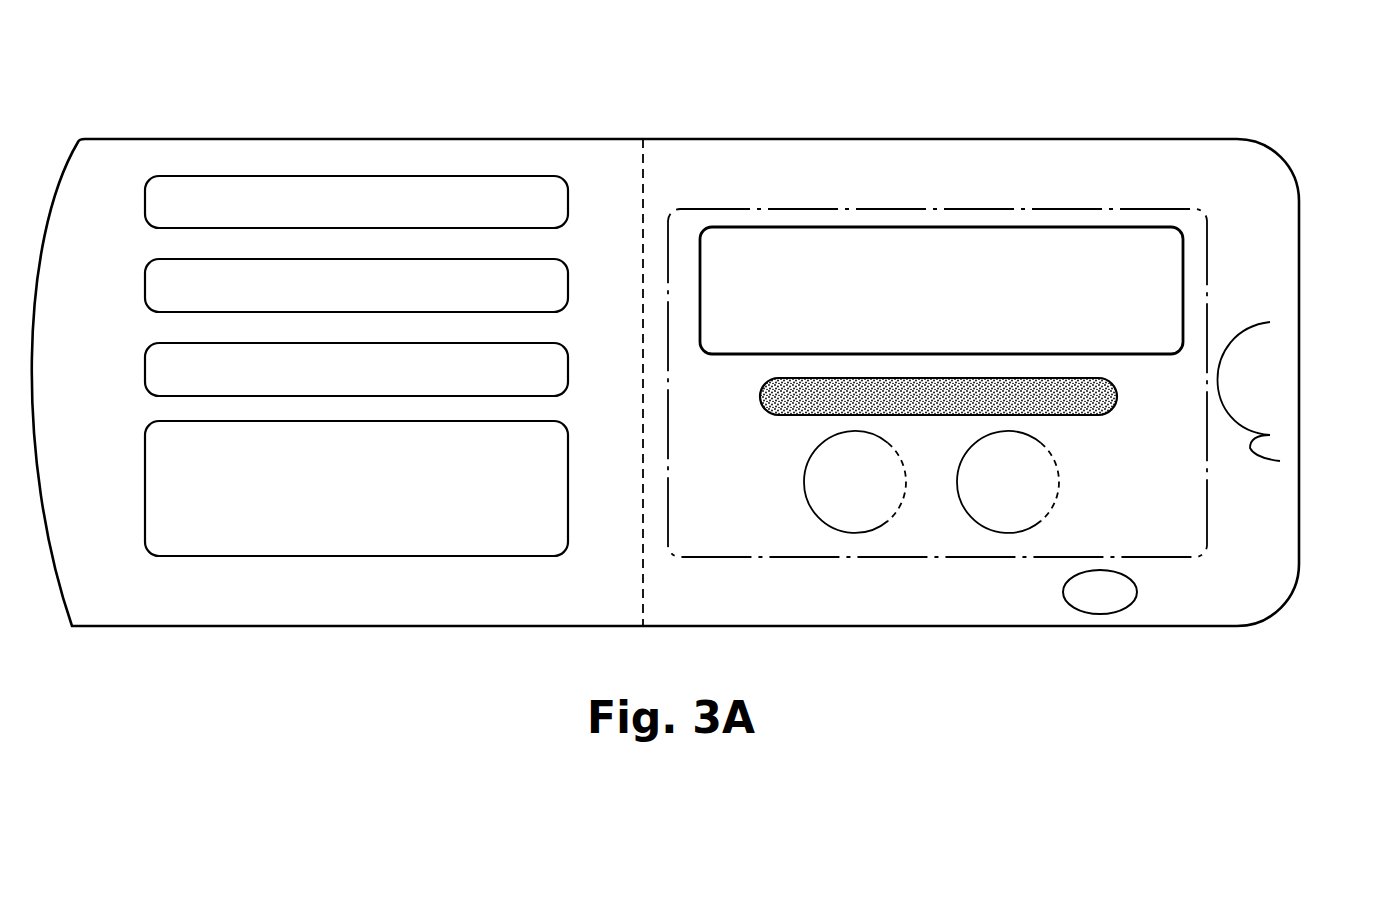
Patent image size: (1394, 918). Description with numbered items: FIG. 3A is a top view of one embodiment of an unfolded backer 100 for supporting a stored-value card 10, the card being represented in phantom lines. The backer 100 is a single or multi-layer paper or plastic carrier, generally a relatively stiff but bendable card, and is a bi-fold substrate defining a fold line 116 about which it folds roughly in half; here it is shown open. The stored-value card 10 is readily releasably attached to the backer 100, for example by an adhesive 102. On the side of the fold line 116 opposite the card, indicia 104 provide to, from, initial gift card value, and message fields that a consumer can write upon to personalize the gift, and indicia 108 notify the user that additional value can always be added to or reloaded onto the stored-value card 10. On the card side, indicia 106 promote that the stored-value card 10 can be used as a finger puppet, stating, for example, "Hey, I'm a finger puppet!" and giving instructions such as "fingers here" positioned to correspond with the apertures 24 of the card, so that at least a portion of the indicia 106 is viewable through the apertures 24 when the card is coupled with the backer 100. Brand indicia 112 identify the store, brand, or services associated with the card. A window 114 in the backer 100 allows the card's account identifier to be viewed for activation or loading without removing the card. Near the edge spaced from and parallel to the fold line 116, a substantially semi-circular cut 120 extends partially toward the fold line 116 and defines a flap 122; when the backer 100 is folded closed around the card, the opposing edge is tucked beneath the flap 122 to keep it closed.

The stored-value card 10 is at (1205, 249).
The apertures 24 is at (843, 518).
The backer 100 is at (1095, 92).
The adhesive 102 is at (1117, 402).
The indicia 104 is at (380, 175).
The indicia 106 is at (1128, 172).
The indicia 108 is at (200, 605).
The brand indicia 112 is at (1070, 603).
The window 114 is at (1178, 279).
The fold line 116 is at (645, 161).
The cut 120 is at (1280, 461).
The flap 122 is at (1230, 382).